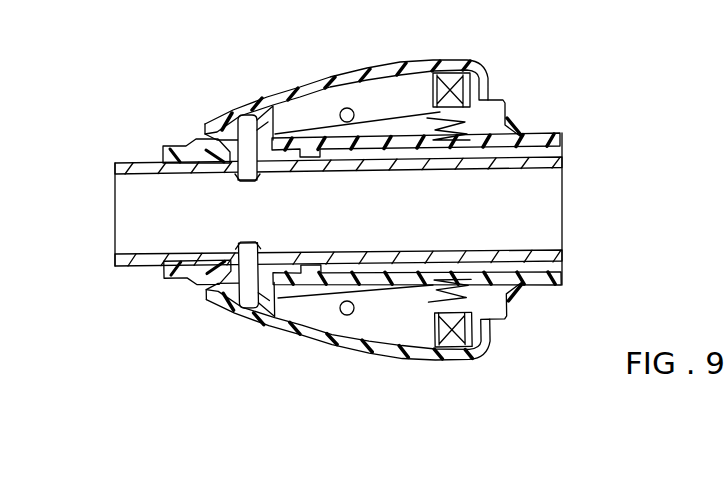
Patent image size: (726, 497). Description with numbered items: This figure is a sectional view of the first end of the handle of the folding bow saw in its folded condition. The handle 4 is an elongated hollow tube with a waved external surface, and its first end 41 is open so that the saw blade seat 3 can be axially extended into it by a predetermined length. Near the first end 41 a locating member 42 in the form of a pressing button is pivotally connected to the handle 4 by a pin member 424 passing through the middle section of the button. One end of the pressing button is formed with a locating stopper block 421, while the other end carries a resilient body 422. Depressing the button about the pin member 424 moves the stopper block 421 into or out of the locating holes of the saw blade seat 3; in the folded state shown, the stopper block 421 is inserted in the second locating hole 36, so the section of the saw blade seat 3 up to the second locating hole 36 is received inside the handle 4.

The saw blade seat 3 is at (140, 165).
The handle 4 is at (535, 282).
The first end of the handle 41 is at (167, 290).
The locating member 42 is at (376, 72).
The locating stopper block 421 is at (235, 182).
The resilient body 422 is at (455, 88).
The pin member 424 is at (343, 110).
The second locating hole 36 is at (255, 183).